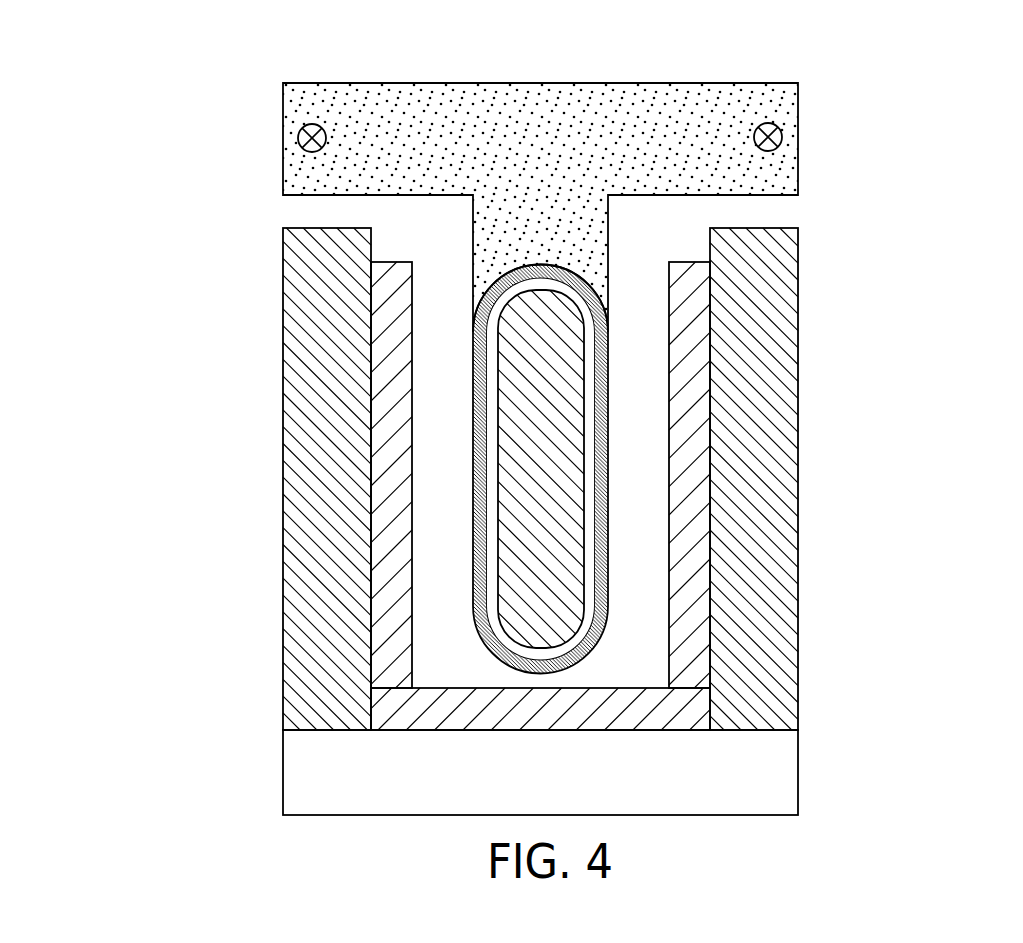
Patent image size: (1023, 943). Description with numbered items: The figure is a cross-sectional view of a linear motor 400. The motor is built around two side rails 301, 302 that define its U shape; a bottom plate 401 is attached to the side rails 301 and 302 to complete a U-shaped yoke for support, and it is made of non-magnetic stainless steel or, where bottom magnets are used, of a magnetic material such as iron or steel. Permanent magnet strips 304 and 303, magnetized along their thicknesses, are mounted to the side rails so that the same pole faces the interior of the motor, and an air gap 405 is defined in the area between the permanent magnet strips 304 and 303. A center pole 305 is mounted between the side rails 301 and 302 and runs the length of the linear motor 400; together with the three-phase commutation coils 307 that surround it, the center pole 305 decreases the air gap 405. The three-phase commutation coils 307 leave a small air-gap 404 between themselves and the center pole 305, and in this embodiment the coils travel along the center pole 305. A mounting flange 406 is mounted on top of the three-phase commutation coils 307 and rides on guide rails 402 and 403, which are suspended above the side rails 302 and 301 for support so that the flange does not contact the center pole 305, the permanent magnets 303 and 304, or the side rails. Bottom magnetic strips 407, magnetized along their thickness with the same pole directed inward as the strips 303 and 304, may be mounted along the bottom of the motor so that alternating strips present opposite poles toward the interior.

The linear motor 400 is at (912, 197).
The bottom plate 401 is at (733, 788).
The side rail 301 is at (799, 522).
The side rail 302 is at (283, 521).
The permanent magnet strip 303 is at (697, 262).
The permanent magnet strip 304 is at (384, 262).
The center pole 305 is at (564, 480).
The three-phase commutation coils 307 is at (611, 438).
The guide rail 402 is at (311, 124).
The guide rail 403 is at (768, 124).
The air-gap 404 is at (571, 648).
The air gap 405 is at (421, 428).
The mounting flange 406 is at (799, 137).
The bottom magnetic strip 407 is at (437, 688).